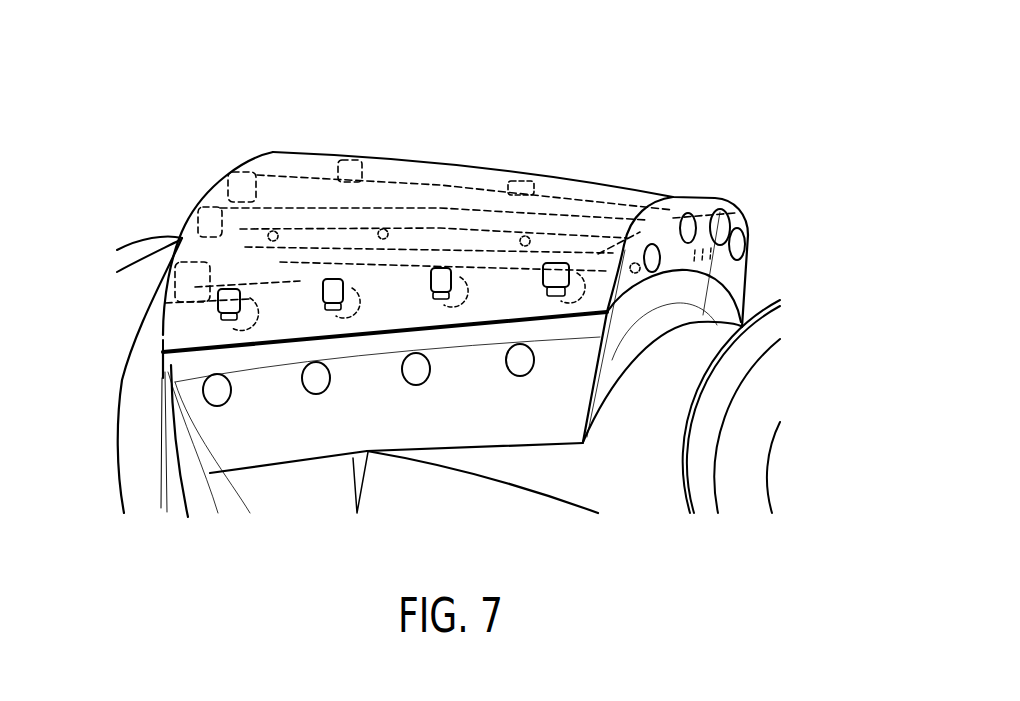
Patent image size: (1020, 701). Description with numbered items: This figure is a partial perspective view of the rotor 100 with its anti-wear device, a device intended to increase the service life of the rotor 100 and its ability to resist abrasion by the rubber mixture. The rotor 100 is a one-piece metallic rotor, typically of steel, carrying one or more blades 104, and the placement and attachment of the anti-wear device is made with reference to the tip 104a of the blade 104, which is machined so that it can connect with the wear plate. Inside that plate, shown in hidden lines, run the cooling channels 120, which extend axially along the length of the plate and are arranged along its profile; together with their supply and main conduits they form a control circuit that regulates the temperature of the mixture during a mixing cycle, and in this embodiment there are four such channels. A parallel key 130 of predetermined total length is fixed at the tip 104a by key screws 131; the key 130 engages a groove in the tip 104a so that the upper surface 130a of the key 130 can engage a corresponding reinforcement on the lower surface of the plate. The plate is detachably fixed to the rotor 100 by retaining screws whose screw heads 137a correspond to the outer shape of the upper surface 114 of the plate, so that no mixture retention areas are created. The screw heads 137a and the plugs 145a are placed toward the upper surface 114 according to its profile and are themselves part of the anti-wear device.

The rotor 100 is at (598, 118).
The upper surface of the plate 114 is at (660, 190).
The blade 104 is at (690, 295).
The tip of the blade 104a is at (163, 343).
The cooling channels 120 is at (312, 150).
The key 130 is at (200, 302).
The upper surface of the key 130a is at (345, 170).
The key screws 131 is at (382, 217).
The screw head 137a is at (333, 312).
The plug 145a is at (217, 392).